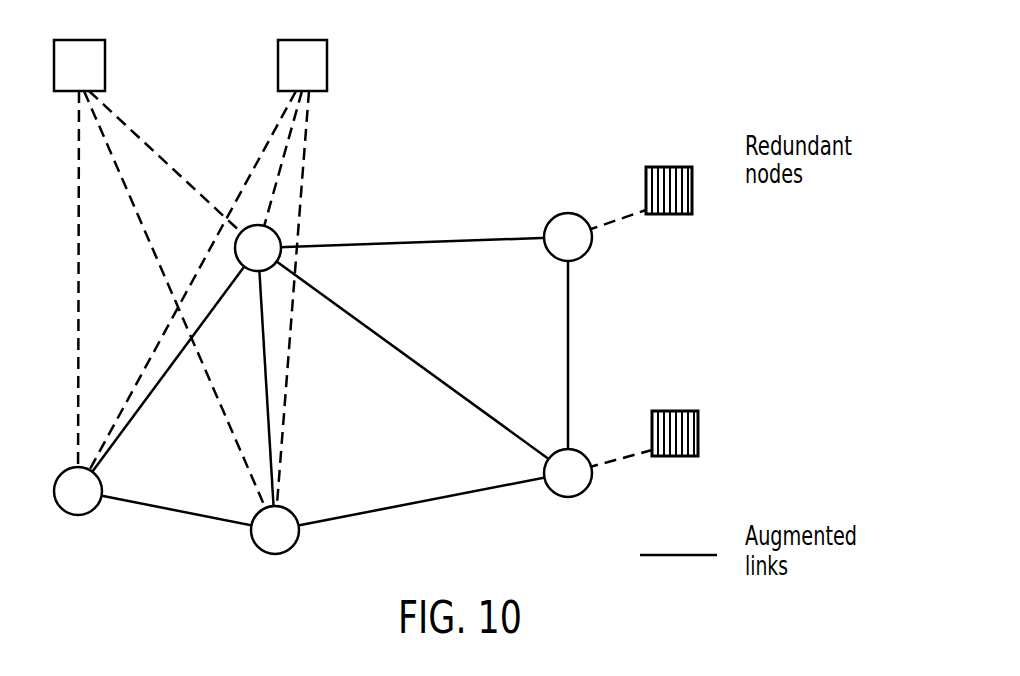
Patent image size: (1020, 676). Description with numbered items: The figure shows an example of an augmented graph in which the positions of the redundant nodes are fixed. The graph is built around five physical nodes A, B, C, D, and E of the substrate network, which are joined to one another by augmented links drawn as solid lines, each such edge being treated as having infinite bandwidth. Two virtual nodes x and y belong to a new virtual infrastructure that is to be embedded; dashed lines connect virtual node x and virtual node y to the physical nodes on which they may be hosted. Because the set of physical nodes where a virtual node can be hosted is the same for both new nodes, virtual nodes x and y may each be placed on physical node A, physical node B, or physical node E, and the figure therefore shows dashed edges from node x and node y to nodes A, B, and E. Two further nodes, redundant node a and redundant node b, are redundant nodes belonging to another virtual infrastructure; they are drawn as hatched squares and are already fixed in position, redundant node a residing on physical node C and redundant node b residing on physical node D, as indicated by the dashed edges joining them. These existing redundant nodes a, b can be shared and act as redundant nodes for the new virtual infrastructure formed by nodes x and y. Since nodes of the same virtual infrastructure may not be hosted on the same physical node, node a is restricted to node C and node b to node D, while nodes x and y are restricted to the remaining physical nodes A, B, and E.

The physical node A is at (78, 491).
The physical node B is at (258, 248).
The physical node C is at (568, 237).
The physical node D is at (568, 473).
The physical node E is at (275, 530).
The virtual node x is at (79, 65).
The virtual node y is at (302, 65).
The redundant node a is at (669, 174).
The redundant node b is at (675, 417).